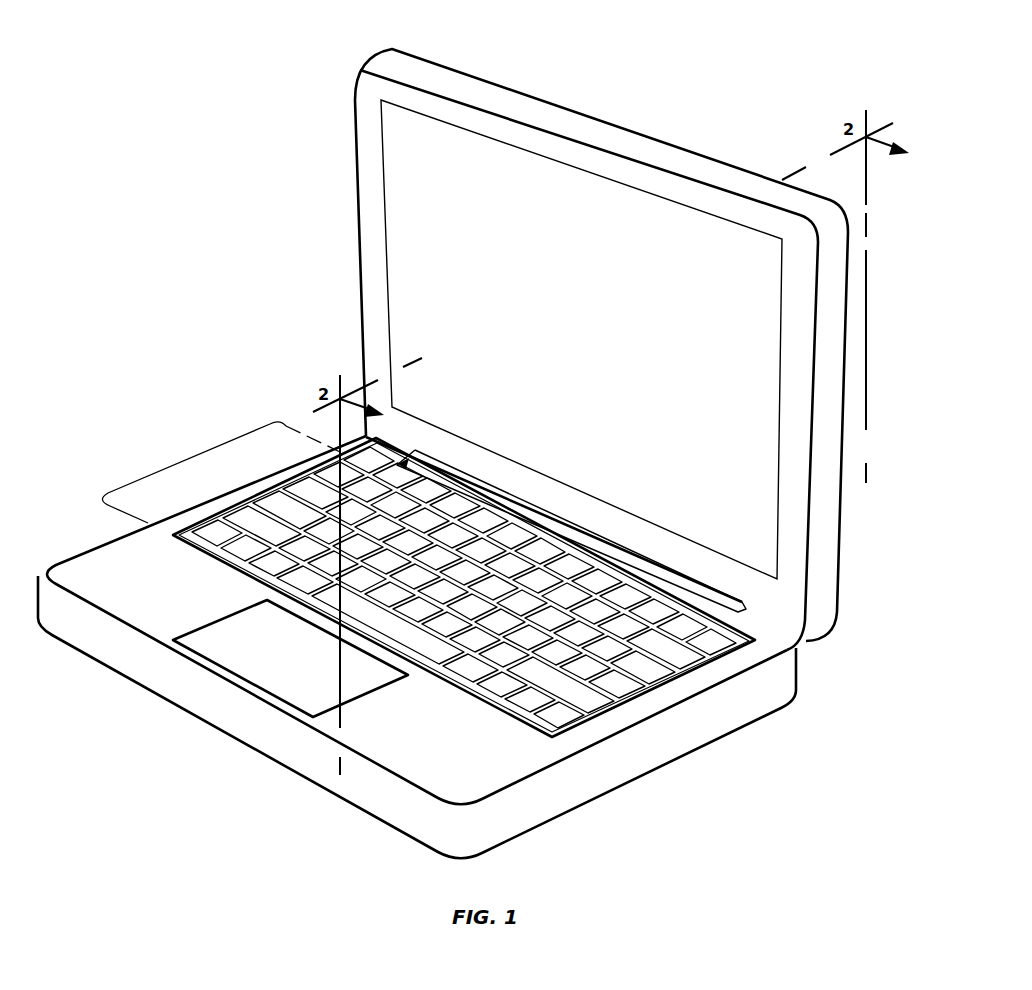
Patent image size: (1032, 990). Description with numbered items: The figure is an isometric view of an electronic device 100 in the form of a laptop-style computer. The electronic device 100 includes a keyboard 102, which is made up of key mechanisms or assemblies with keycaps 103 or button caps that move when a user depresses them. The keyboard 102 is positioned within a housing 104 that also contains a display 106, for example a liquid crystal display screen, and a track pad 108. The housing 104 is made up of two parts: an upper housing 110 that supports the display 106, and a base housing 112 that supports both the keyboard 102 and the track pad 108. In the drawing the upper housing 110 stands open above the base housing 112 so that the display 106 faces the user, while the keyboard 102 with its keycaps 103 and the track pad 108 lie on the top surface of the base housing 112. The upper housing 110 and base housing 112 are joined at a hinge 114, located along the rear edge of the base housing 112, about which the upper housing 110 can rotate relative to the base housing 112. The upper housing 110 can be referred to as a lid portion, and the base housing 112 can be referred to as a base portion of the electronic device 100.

The electronic device 100 is at (223, 336).
The keyboard 102 is at (200, 455).
The keycaps 103 is at (660, 665).
The housing 104 is at (80, 558).
The display 106 is at (606, 190).
The track pad 108 is at (260, 675).
The upper housing 110 is at (705, 162).
The base housing 112 is at (748, 697).
The hinge 114 is at (712, 600).